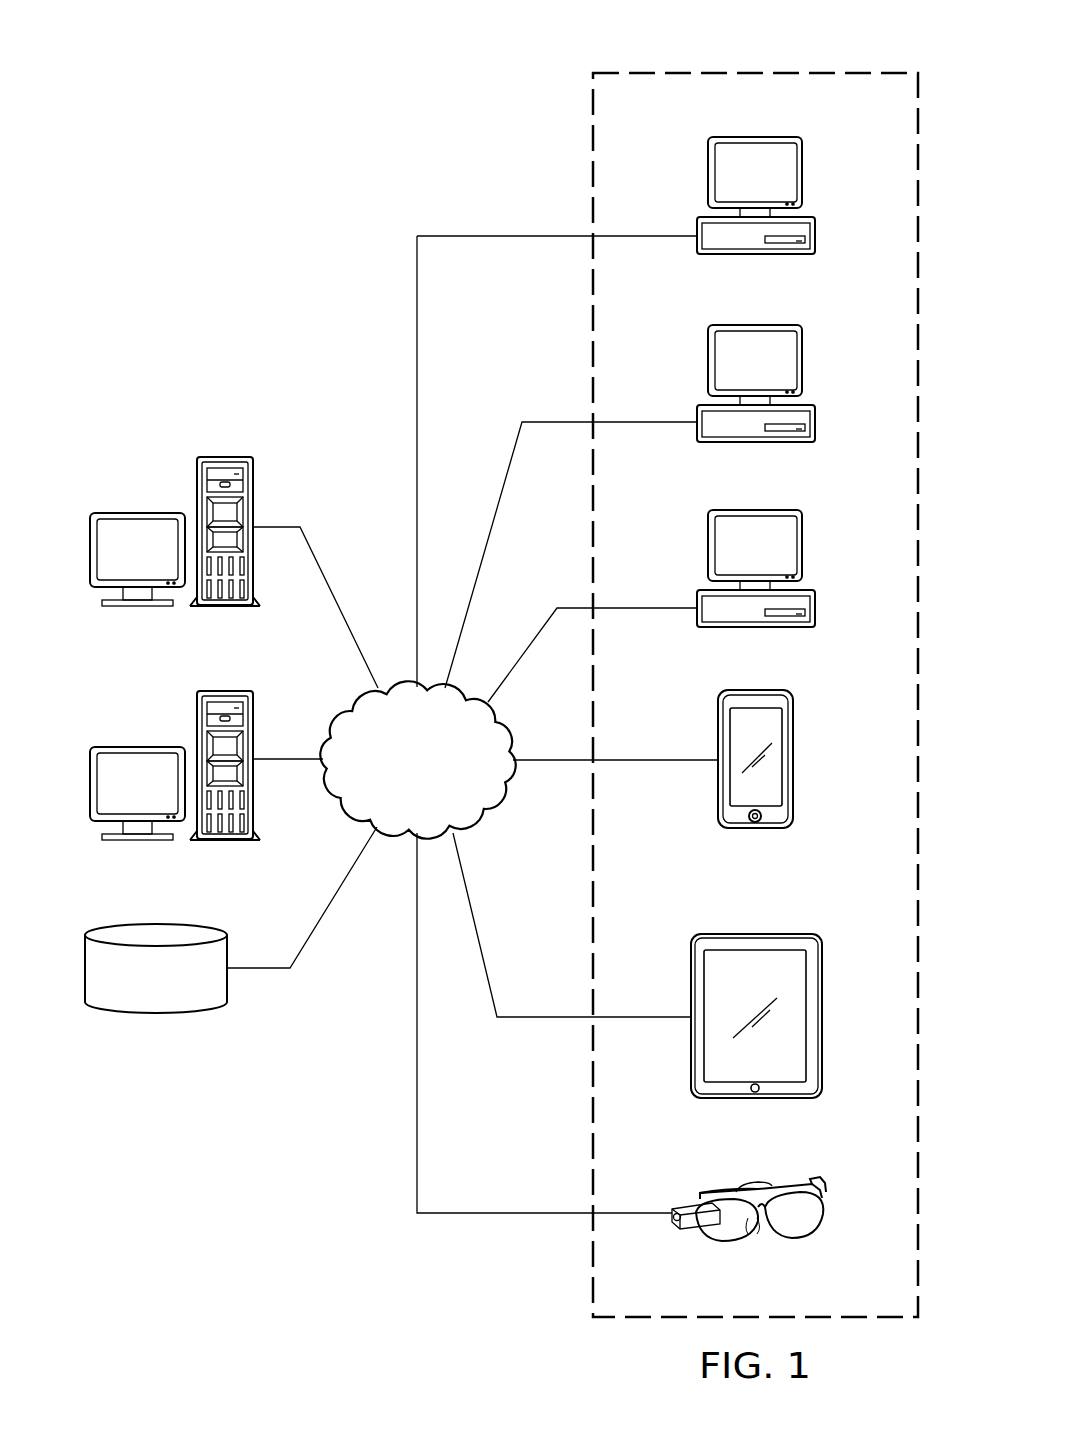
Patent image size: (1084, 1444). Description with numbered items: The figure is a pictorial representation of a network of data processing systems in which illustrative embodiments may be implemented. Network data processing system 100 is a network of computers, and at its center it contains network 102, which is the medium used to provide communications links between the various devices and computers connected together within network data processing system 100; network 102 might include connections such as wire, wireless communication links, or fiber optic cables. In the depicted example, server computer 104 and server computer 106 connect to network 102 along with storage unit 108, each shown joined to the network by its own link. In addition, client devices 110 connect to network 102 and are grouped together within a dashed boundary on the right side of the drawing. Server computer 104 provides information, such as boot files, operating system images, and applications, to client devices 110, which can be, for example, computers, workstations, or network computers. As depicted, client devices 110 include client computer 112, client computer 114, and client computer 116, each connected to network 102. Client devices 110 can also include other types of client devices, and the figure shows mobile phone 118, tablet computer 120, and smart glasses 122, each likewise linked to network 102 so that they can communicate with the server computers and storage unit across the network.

The network data processing system 100 is at (280, 326).
The network 102 is at (440, 793).
The server computer 104 is at (138, 513).
The server computer 106 is at (138, 747).
The storage unit 108 is at (155, 1016).
The client devices 110 is at (831, 68).
The client computer 112 is at (802, 172).
The client computer 114 is at (802, 358).
The client computer 116 is at (803, 545).
The mobile phone 118 is at (793, 777).
The tablet computer 120 is at (822, 1027).
The smart glasses 122 is at (820, 1220).